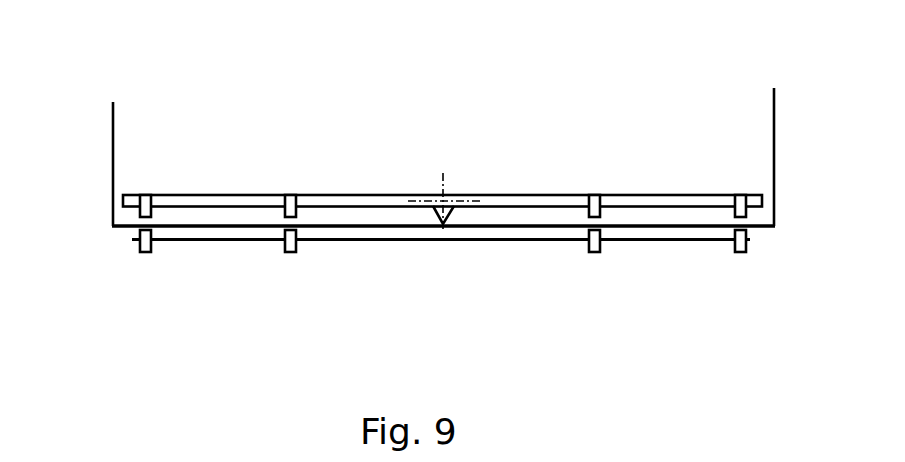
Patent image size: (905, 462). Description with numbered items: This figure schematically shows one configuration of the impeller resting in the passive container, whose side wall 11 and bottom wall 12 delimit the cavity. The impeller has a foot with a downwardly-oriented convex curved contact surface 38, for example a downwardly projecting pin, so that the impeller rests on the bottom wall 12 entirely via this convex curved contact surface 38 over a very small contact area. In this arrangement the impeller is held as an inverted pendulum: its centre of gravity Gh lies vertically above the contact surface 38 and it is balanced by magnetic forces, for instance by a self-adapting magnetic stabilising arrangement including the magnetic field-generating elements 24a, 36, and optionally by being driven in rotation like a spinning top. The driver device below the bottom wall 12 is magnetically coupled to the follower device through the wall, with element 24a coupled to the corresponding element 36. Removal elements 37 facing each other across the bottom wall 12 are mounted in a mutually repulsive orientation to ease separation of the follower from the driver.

The side wall 11 is at (112, 120).
The bottom wall 12 is at (127, 227).
The removal magnetic field-generating element 37 is at (291, 200).
The magnetic field-generating element 36 is at (740, 198).
The downwardly-oriented convex curved contact surface 38 is at (443, 223).
The centre of gravity Gh is at (443, 223).
The magnetic field-generating element 24a is at (745, 251).